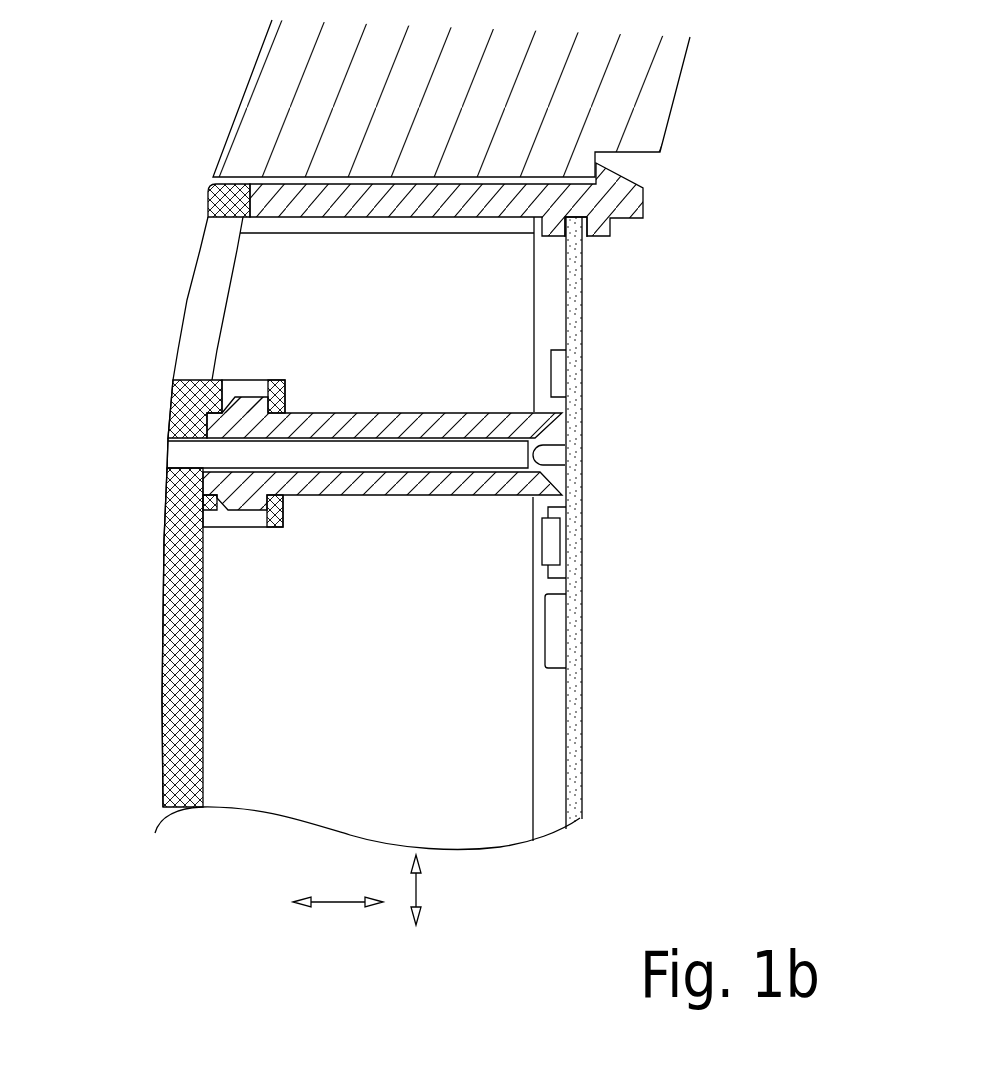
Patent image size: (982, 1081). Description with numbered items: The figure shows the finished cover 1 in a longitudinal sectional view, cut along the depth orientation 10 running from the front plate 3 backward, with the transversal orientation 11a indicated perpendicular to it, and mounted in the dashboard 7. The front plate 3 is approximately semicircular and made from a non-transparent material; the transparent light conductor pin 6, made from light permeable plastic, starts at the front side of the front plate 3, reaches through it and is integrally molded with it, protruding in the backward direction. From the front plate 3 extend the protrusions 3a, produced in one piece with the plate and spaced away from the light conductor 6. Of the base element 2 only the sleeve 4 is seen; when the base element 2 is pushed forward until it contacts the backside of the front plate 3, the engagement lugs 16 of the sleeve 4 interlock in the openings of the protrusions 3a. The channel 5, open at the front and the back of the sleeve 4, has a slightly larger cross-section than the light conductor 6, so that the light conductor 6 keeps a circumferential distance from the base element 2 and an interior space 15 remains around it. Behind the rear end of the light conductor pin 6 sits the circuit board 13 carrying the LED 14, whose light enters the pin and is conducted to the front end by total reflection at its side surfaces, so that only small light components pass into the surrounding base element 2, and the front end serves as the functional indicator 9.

The cover 1 is at (146, 387).
The base element 2 is at (347, 492).
The front plate 3 is at (183, 425).
The protrusions 3a is at (285, 396).
The sleeve 4 is at (382, 499).
The channel 5 is at (425, 472).
The light conductor pin 6 is at (348, 456).
The dashboard 7 is at (451, 98).
The functional indicator 9 is at (162, 453).
The depth orientation 10 is at (335, 903).
The transversal orientation 11a is at (417, 893).
The circuit board 13 is at (575, 608).
The LED 14 is at (555, 457).
The interior space / cavity 15 is at (387, 529).
The engagement lugs 16 is at (240, 433).